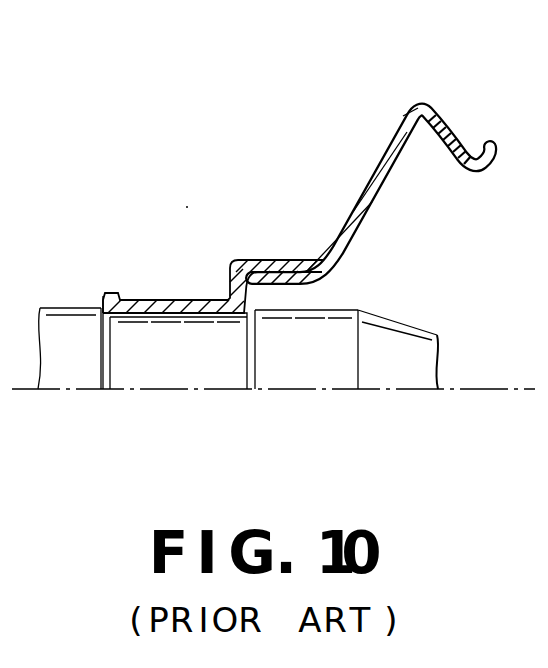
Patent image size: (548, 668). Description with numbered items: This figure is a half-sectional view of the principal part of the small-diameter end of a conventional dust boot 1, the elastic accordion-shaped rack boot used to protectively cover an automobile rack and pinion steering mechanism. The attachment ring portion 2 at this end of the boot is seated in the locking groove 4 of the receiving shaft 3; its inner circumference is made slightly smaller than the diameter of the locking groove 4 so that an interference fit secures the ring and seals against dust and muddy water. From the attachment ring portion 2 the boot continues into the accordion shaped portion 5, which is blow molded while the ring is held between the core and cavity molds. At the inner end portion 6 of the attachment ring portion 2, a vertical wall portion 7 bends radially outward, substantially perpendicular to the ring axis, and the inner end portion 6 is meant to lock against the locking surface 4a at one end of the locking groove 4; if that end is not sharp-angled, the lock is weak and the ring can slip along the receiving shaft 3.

The dust boot 1 is at (371, 177).
The attachment ring portion 2 is at (170, 299).
The receiving shaft 3 is at (72, 372).
The locking groove part 4 is at (155, 375).
The locking surface 4a is at (256, 318).
The accordion shaped portion 5 is at (461, 133).
The inner end portion 6 is at (240, 320).
The vertical wall portion 7 is at (243, 261).